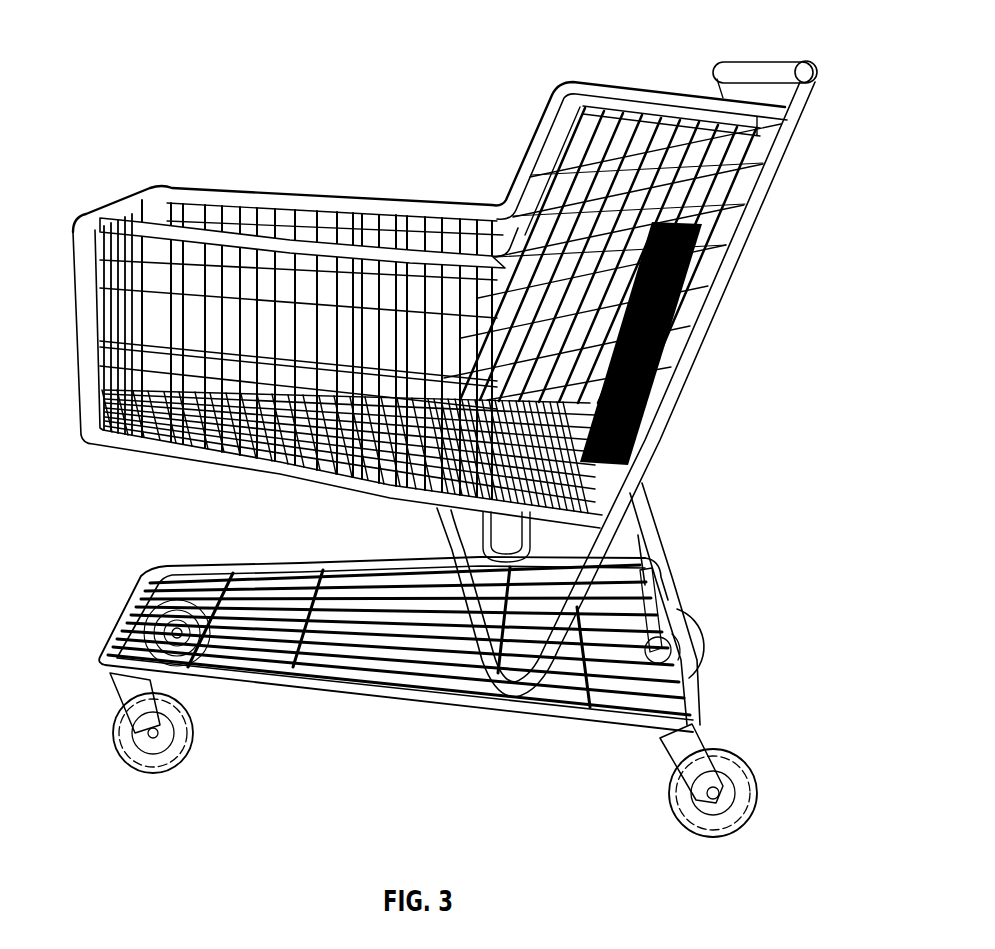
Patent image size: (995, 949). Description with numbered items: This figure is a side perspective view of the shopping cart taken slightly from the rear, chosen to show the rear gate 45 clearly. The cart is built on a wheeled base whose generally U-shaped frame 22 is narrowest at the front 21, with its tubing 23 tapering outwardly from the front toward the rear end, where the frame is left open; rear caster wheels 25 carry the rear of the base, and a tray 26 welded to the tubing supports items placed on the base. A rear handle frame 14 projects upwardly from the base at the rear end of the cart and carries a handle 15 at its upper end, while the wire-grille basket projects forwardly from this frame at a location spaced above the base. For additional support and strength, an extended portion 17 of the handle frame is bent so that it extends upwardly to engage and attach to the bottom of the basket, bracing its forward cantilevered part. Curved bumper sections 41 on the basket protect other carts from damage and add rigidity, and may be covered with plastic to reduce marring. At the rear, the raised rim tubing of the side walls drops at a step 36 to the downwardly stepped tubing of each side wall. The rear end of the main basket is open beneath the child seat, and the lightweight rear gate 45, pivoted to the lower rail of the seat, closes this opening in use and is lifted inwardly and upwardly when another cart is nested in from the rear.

The rear handle frame 14 is at (648, 432).
The handle 15 is at (805, 60).
The extended portion 17 is at (443, 520).
The front 21 is at (123, 600).
The U-shaped frame 22 is at (750, 60).
The tubing 23 is at (353, 557).
The rear caster wheels 25 is at (700, 630).
The tray 26 is at (300, 563).
The step 36 is at (553, 148).
The curved bumper sections 41 is at (177, 190).
The rear gate 45 is at (700, 287).